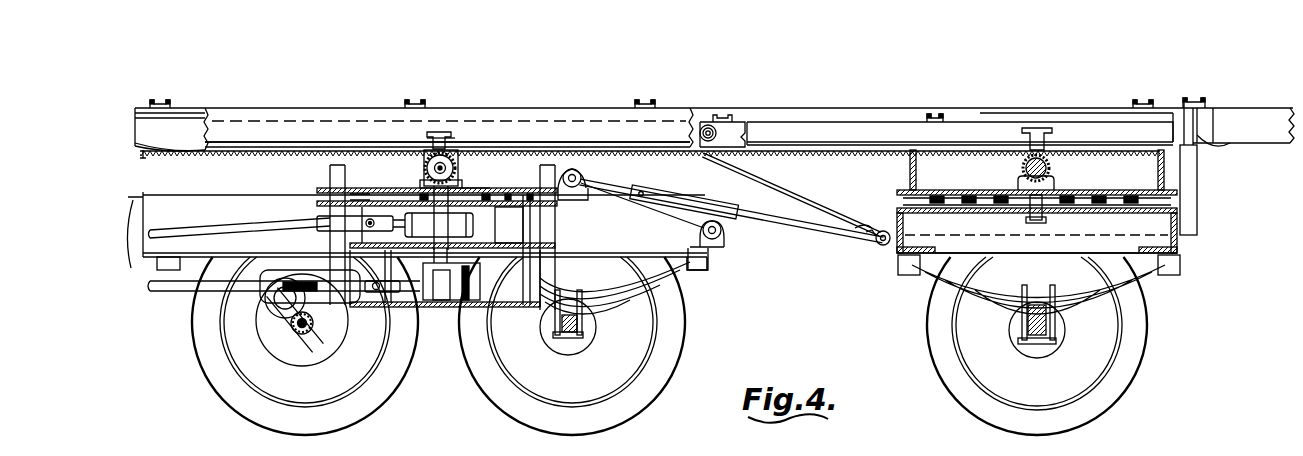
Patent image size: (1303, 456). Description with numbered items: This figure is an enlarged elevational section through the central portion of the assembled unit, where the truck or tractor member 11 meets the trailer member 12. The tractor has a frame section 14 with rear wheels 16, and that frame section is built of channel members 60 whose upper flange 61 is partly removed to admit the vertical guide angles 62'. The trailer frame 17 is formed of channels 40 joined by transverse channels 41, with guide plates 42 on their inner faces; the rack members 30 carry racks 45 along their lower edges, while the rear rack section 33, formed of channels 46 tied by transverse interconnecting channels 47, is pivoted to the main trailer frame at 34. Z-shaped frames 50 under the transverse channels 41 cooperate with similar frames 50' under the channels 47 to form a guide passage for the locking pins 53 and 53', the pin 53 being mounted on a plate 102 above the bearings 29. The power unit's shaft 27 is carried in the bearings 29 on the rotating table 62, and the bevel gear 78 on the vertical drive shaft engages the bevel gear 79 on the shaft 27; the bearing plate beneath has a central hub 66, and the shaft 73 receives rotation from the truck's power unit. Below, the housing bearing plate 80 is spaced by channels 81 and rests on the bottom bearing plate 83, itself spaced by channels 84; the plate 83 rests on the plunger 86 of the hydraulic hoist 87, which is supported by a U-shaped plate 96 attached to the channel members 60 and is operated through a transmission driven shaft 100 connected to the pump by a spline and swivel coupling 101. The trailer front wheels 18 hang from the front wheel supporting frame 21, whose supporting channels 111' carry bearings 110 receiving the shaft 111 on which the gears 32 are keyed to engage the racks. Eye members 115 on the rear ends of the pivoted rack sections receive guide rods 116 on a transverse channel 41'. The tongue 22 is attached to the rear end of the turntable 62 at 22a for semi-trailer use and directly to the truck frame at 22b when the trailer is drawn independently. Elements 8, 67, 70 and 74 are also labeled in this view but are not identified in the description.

The rack bar end 8 is at (143, 160).
The truck or tractor member 11 is at (436, 384).
The trailer member 12 is at (910, 296).
The frame section 14 is at (148, 290).
The rear wheels 16 is at (620, 398).
The trailer frame 17 is at (1244, 138).
The front wheels 18 is at (1100, 388).
The front wheel supporting frame 21 is at (1185, 243).
The tongue 22 is at (786, 226).
The tongue attachment to turntable 22a is at (648, 178).
The tongue attachment to truck frame 22b is at (722, 238).
The shaft 27 is at (427, 138).
The bearing 29 is at (426, 170).
The rack members 30 is at (152, 156).
The gears 32 is at (1050, 168).
The rear rack section 33 is at (990, 122).
The pivot 34 is at (702, 126).
The channels 40 is at (878, 107).
The transverse channels 41 is at (651, 86).
The transverse channel 41' is at (1199, 86).
The guide plates 42 is at (1197, 188).
The racks 45 is at (553, 150).
The channels 46 is at (733, 140).
The transverse interconnecting channels 47 is at (941, 114).
The Z-shaped frames 50 is at (447, 103).
The Z-shaped frames 50' is at (960, 105).
The locking pin 53 is at (459, 107).
The locking pin 53' is at (1058, 107).
The channel members 60 is at (129, 232).
The upper flange 61 is at (238, 195).
The rotating table 62 is at (437, 186).
The vertical guide angles 62' is at (454, 233).
The central aperture hub 66 is at (405, 193).
The bearing plate 67 is at (475, 190).
The drum 70 is at (492, 240).
The shaft 73 is at (228, 231).
The coupling 74 is at (326, 226).
The bevel gear 78 is at (462, 182).
The bevel gear 79 is at (455, 168).
The housing bearing plate 80 is at (490, 241).
The channels 81 is at (497, 216).
The bottom bearing plate 83 is at (540, 258).
The channels 84 is at (520, 231).
The plunger 86 is at (424, 251).
The hydraulic hoist 87 is at (484, 296).
The U-shaped plate 96 is at (541, 276).
The transmission driven shaft 100 is at (180, 292).
The spline and swivel coupling 101 is at (392, 333).
The plate 102 is at (462, 150).
The bearings 110 is at (1030, 186).
The shaft 111 is at (1010, 191).
The supporting channels 111' is at (1236, 167).
The eye members 115 is at (1228, 144).
The guide rods 116 is at (1199, 122).